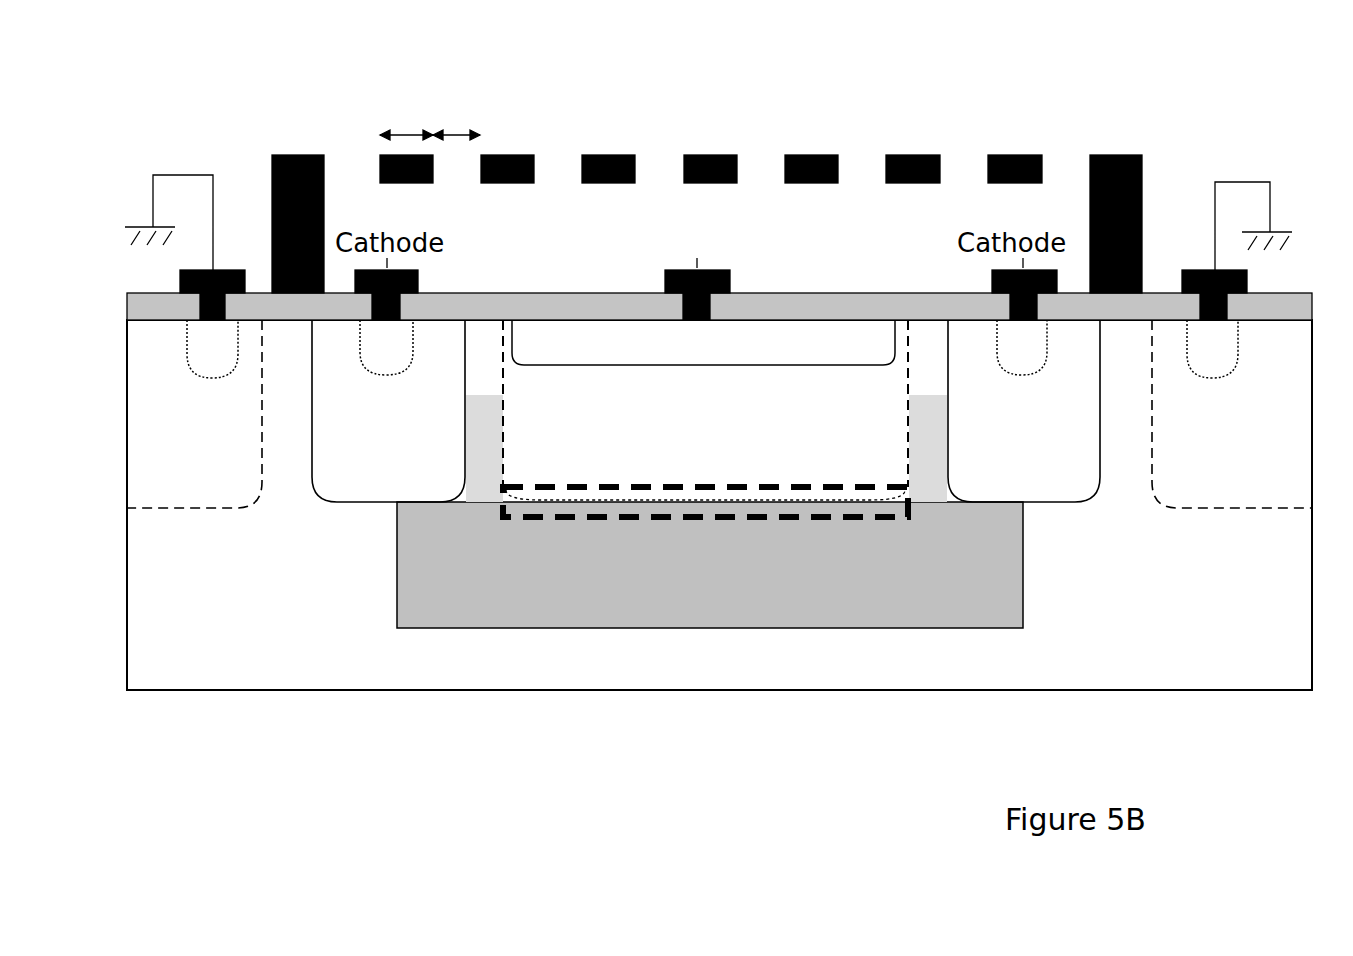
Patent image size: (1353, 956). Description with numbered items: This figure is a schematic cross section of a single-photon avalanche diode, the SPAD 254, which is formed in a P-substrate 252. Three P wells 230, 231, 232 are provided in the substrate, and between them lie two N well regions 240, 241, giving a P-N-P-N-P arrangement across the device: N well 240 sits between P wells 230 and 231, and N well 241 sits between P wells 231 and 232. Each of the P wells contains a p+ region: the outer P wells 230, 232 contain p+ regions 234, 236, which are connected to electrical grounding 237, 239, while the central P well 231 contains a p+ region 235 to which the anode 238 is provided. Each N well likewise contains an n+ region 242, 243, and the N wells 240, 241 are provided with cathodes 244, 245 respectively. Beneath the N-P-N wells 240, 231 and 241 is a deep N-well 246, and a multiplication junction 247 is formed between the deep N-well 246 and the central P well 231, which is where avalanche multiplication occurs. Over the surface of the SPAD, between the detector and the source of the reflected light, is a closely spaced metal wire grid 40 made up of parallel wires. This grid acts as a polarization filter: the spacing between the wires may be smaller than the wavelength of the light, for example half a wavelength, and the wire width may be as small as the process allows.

The metal wire grid 40 is at (866, 163).
The cathode 244 is at (350, 225).
The cathode 245 is at (1038, 222).
The electrical grounding 237 is at (180, 278).
The anode 238 is at (738, 278).
The electrical grounding 239 is at (1245, 278).
The p+ region 234 is at (195, 328).
The p+ region 236 is at (1222, 358).
The P-well 230 is at (180, 447).
The P-well 232 is at (1220, 445).
The N well region 240 is at (372, 447).
The N well region 241 is at (1000, 447).
The n+ region 242 is at (393, 362).
The n+ region 243 is at (1030, 362).
The p+ region 235 is at (652, 357).
The P-well 231 is at (652, 417).
The deep N-well 246 is at (590, 587).
The multiplication junction 247 is at (845, 518).
The P-substrate 252 is at (562, 677).
The SPAD 254 is at (1244, 673).